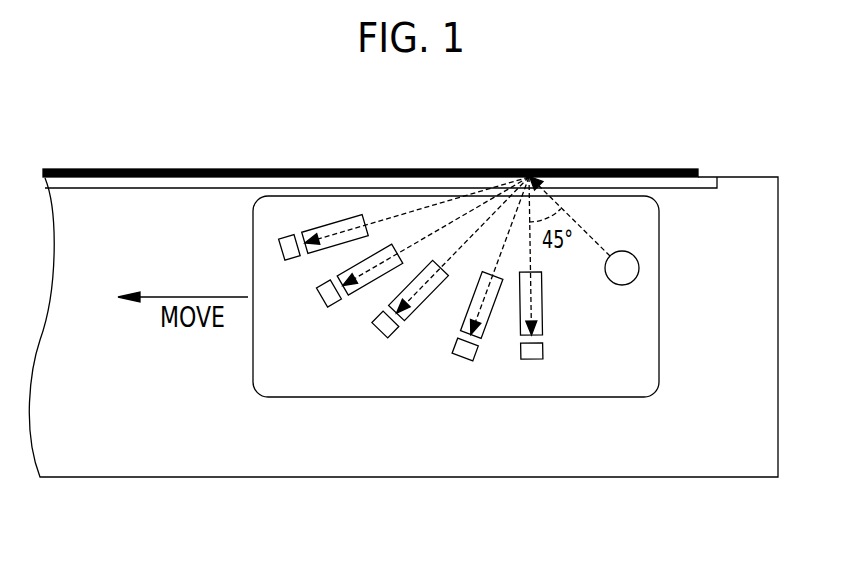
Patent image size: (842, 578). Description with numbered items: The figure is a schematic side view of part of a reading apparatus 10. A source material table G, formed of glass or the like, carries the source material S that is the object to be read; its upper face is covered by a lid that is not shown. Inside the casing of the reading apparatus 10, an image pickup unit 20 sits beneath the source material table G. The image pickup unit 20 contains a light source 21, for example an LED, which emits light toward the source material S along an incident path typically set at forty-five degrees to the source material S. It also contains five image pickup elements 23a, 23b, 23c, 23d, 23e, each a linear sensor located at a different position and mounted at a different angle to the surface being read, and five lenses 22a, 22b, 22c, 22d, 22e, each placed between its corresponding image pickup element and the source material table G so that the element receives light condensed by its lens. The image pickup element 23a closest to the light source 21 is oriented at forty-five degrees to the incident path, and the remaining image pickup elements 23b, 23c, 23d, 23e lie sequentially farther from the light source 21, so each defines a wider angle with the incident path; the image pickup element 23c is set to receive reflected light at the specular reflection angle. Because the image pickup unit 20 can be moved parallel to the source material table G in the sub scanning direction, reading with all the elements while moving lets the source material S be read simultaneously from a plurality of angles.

The reading apparatus 10 is at (510, 478).
The source material table G is at (115, 189).
The source material S is at (557, 168).
The image pickup unit 20 is at (659, 352).
The light source 21 is at (639, 268).
The lens 22a is at (542, 305).
The lens 22b is at (490, 330).
The lens 22c is at (424, 303).
The lens 22d is at (357, 292).
The lens 22e is at (328, 224).
The image pickup element 23a is at (543, 351).
The image pickup element 23b is at (455, 351).
The image pickup element 23c is at (386, 339).
The image pickup element 23d is at (322, 308).
The image pickup element 23e is at (282, 261).